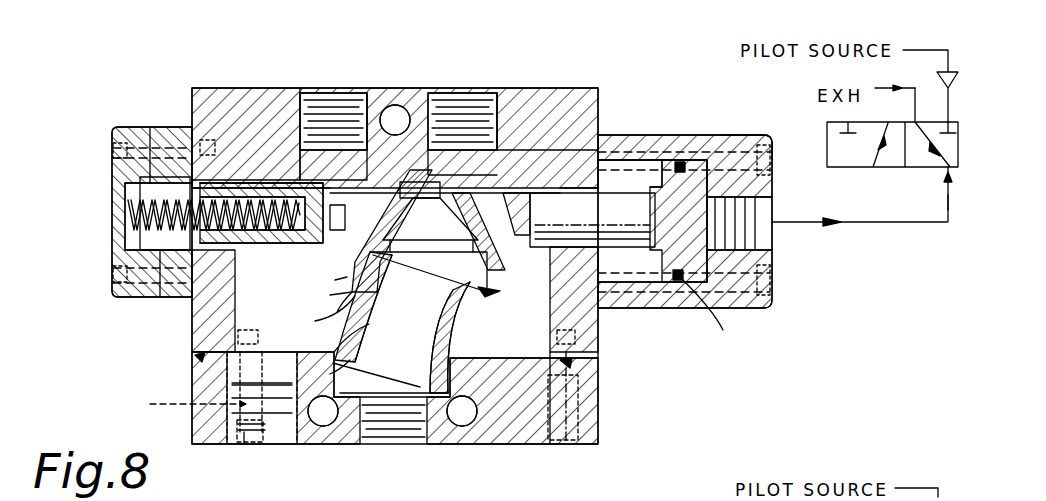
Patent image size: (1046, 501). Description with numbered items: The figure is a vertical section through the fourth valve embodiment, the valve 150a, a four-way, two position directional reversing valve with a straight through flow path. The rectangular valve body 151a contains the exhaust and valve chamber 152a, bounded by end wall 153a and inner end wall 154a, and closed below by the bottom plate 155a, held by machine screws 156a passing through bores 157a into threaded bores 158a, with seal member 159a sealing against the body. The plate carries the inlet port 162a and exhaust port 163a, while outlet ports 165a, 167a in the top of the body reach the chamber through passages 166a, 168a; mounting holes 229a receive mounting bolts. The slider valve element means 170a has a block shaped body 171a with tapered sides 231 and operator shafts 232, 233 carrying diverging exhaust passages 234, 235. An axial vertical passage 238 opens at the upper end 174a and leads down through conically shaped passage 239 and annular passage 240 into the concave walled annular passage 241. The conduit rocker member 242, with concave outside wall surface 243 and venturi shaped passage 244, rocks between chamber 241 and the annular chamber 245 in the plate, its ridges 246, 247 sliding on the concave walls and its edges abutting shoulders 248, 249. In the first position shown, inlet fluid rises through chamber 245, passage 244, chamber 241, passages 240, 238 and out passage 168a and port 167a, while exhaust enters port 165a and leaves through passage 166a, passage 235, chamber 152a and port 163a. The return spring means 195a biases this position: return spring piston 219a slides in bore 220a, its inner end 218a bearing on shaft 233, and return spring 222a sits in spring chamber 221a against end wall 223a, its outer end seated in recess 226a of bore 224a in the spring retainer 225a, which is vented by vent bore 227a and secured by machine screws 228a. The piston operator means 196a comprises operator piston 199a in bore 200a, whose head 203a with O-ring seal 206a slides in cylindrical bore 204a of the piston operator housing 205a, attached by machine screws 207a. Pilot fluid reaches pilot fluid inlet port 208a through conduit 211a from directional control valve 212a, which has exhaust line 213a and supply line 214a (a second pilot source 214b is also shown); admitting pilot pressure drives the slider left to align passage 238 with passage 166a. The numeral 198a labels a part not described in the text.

The valve 150a is at (278, 87).
The valve body 151a is at (214, 88).
The exhaust and valve chamber 152a is at (504, 142).
The end wall of chamber 153a is at (233, 302).
The inner end wall of chamber 154a is at (582, 319).
The bottom plate 155a is at (567, 407).
The machine screws 156a is at (243, 442).
The bores 157a is at (632, 385).
The threaded bores 158a is at (237, 341).
The seal member 159a is at (572, 366).
The inlet port 162a is at (423, 437).
The exhaust port 163a is at (232, 387).
The outlet port 165a is at (308, 93).
The passage 166a is at (368, 140).
The outlet port 167a is at (492, 114).
The outlet port passage 168a is at (437, 139).
The slider valve element means 170a is at (330, 295).
The slider valve element body 171a is at (335, 280).
The upper end of slider valve element body 174a is at (430, 187).
The return spring means 195a is at (117, 125).
The piston operator means 196a is at (760, 133).
The insert sleeve 198a is at (536, 206).
The operator piston 199a is at (608, 182).
The bore 200a is at (622, 204).
The operator piston head 203a is at (693, 158).
The cylindrical bore 204a is at (642, 167).
The piston operator housing 205a is at (736, 308).
The O-ring seal 206a is at (733, 326).
The machine screws 207a is at (777, 155).
The pilot fluid inlet port 208a is at (778, 204).
The conduit 211a is at (872, 262).
The directional control valve 212a is at (926, 170).
The exhaust line 213a is at (915, 112).
The supply line 214a is at (956, 52).
The pilot source connection 214b is at (946, 498).
The inner end of return spring piston 218a is at (358, 157).
The return spring piston 219a is at (228, 140).
The bore 220a is at (235, 183).
The spring chamber 221a is at (144, 182).
The return spring 222a is at (136, 243).
The inner end wall of spring chamber 223a is at (286, 243).
The bore 224a is at (126, 176).
The spring retainer 225a is at (149, 128).
The cylindrical recess 226a is at (144, 221).
The vent bore 227a is at (126, 214).
The machine screws 228a is at (110, 150).
The mounting holes 229a is at (390, 105).
The tapered sides 231 is at (358, 252).
The operator shaft 232 is at (525, 248).
The operator shaft 233 is at (353, 217).
The exhaust passage 234 is at (505, 193).
The exhaust passage 235 is at (431, 172).
The axial vertical passage 238 is at (424, 245).
The conically shaped passage 239 is at (428, 271).
The annular passage 240 is at (402, 322).
The annular passage 241 is at (460, 290).
The conduit rocker member 242 is at (439, 318).
The outside wall surface 243 is at (362, 320).
The longitudinal passage 244 is at (384, 400).
The annular chamber 245 is at (306, 400).
The ridge 246 is at (337, 345).
The ridge 247 is at (502, 280).
The shoulder 248 is at (358, 304).
The shoulder 249 is at (354, 354).